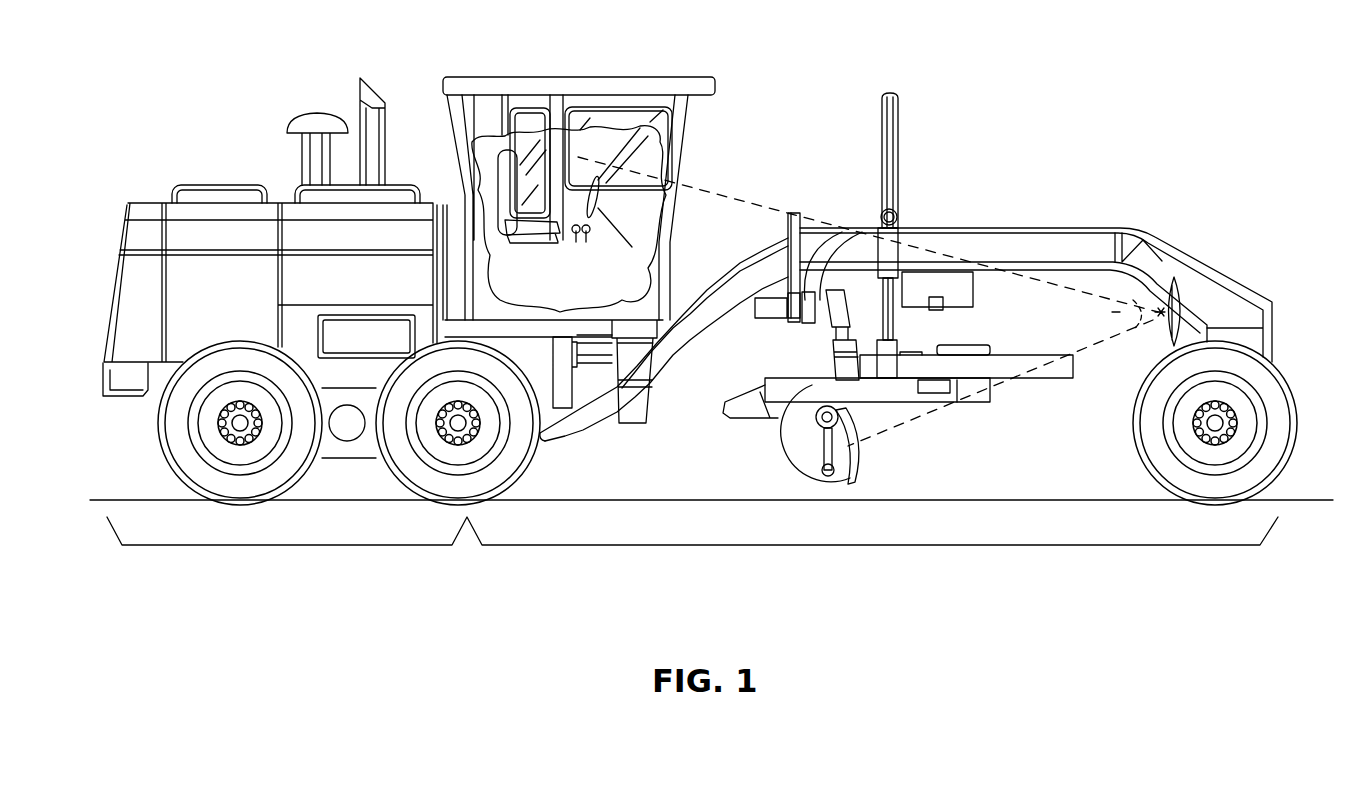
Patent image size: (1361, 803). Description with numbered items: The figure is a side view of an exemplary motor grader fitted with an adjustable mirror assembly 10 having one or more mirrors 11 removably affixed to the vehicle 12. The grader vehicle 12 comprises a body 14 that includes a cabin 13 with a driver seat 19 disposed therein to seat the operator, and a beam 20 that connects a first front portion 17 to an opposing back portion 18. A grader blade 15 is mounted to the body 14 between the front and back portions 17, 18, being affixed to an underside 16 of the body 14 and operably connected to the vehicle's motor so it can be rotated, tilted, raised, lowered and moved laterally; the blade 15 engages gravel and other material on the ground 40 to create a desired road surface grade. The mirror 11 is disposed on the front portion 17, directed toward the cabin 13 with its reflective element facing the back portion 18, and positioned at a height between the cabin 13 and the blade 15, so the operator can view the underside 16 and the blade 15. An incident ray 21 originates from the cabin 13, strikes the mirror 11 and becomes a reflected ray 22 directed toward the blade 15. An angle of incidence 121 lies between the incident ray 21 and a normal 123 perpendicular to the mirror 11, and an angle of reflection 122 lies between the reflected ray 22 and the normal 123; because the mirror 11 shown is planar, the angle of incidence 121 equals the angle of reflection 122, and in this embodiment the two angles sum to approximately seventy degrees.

The adjustable mirror assembly 10 is at (1210, 179).
The mirror 11 is at (1180, 302).
The vehicle 12 is at (573, 228).
The cabin 13 is at (663, 172).
The body 14 is at (748, 263).
The grader blade 15 is at (850, 470).
The underside 16 is at (873, 398).
The first front portion 17 is at (1190, 277).
The back portion 18 is at (178, 230).
The driver seat 19 is at (500, 132).
The beam 20 is at (917, 250).
The incident ray 21 is at (993, 274).
The reflected ray 22 is at (1072, 352).
The ground 40 is at (1308, 500).
The angle of incidence 121 is at (1141, 305).
The angle of reflection 122 is at (1145, 310).
The normal 123 is at (1117, 310).